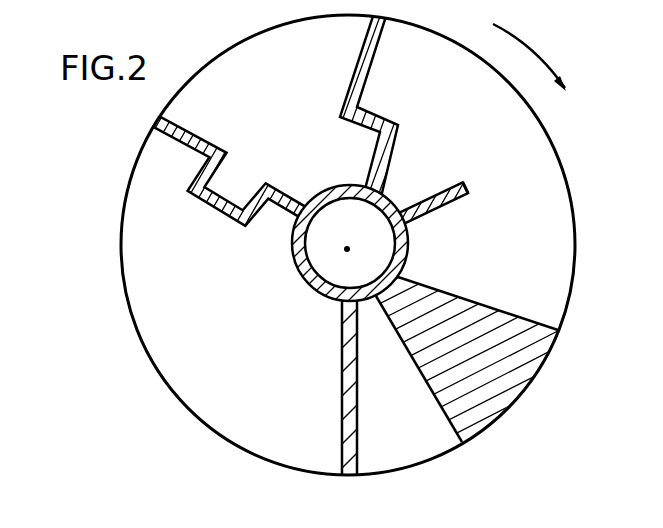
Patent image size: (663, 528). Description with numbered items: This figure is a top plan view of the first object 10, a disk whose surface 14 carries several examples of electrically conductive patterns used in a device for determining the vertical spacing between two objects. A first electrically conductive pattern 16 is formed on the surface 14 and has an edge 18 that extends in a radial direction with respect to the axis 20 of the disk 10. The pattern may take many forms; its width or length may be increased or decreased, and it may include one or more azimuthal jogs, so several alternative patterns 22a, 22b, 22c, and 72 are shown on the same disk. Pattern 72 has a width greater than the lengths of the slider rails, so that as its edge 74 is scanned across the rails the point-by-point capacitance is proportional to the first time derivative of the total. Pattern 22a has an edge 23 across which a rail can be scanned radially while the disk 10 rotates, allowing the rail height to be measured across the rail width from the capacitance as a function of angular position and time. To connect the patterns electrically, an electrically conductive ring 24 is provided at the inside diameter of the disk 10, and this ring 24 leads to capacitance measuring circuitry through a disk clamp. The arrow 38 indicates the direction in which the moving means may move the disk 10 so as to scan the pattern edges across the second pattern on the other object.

The first object 10 is at (166, 387).
The surface 14 is at (214, 324).
The pattern 16 is at (355, 427).
The edge 18 is at (350, 360).
The axis 20 is at (345, 249).
The pattern 22a is at (431, 204).
The pattern 22b is at (367, 77).
The pattern 22c is at (228, 145).
The edge 23 is at (463, 181).
The electrically conductive ring 24 is at (322, 292).
The arrow 38 is at (518, 45).
The pattern 72 is at (445, 293).
The edge 74 is at (407, 350).